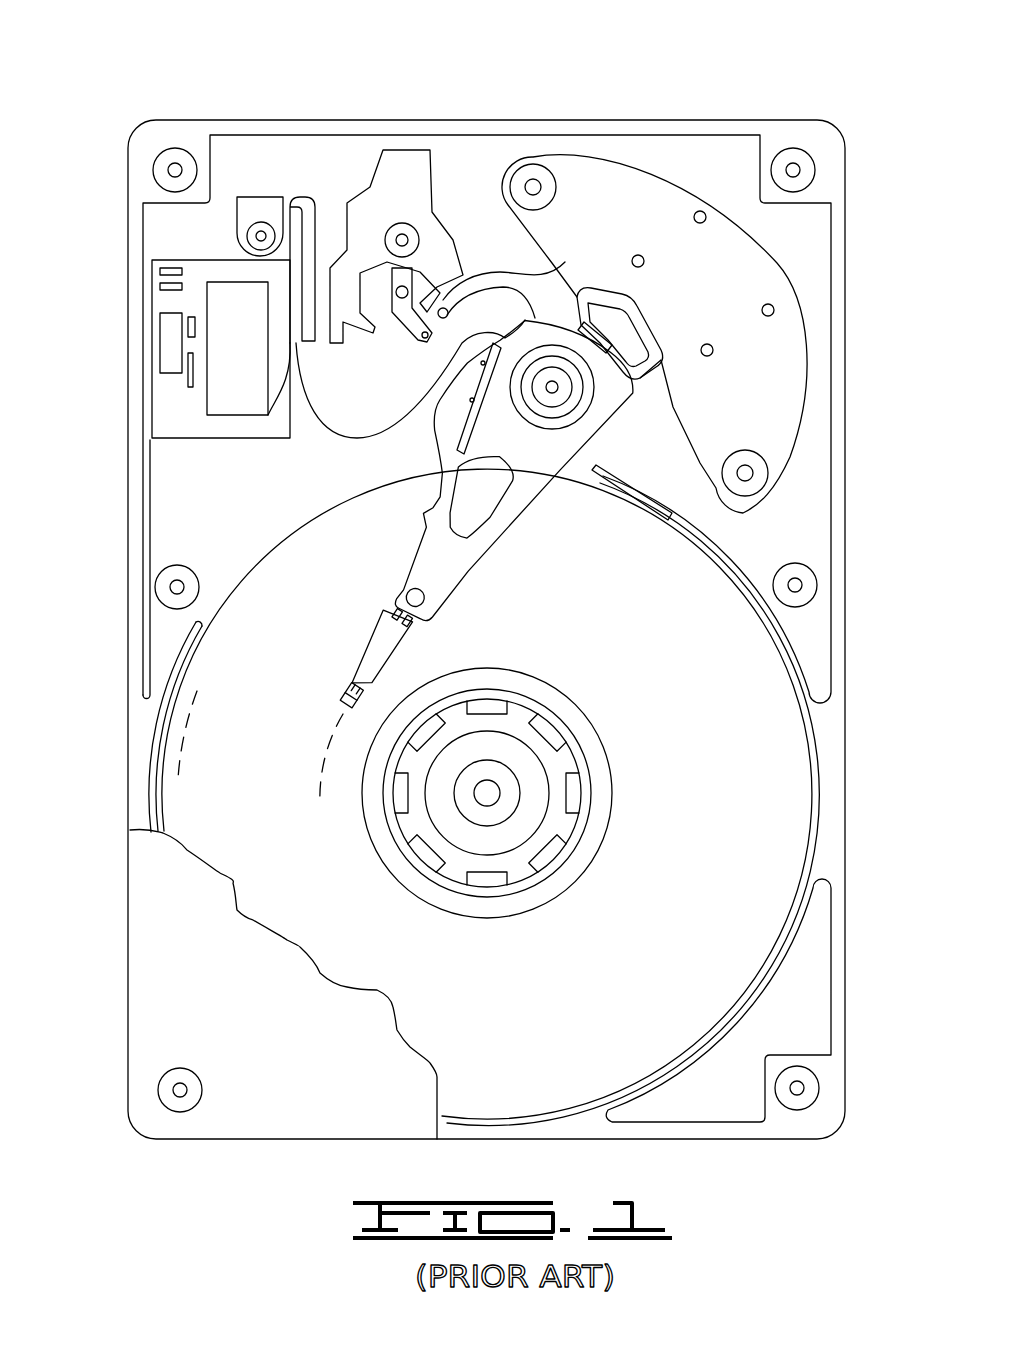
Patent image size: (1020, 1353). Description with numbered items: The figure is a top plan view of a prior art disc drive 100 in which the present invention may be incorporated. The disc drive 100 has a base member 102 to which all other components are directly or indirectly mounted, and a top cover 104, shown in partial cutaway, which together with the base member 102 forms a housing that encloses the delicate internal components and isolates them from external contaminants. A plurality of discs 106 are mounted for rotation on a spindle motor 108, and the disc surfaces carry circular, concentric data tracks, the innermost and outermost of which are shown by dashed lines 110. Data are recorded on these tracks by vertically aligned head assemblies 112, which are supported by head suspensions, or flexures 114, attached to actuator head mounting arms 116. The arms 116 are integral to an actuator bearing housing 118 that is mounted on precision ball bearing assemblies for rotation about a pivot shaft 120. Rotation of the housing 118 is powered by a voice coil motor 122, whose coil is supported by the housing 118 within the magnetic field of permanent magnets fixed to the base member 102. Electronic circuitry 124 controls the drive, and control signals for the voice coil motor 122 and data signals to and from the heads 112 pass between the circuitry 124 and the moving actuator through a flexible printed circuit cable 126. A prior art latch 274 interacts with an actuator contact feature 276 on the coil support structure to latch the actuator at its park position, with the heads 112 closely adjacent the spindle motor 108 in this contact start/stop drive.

The disc drive 100 is at (243, 97).
The base member 102 is at (215, 475).
The top cover 104 is at (190, 972).
The discs 106 is at (740, 880).
The spindle motor 108 is at (527, 925).
The data tracks 110 is at (327, 740).
The head assemblies 112 is at (343, 690).
The head suspensions 114 is at (370, 657).
The actuator head mounting arms 116 is at (430, 573).
The actuator bearing housing 118 is at (450, 498).
The pivot shaft 120 is at (563, 402).
The voice coil motor 122 is at (590, 220).
The electronic circuitry 124 is at (170, 262).
The flexible printed circuit cable 126 is at (341, 443).
The latch 274 is at (400, 165).
The actuator contact feature 276 is at (443, 318).